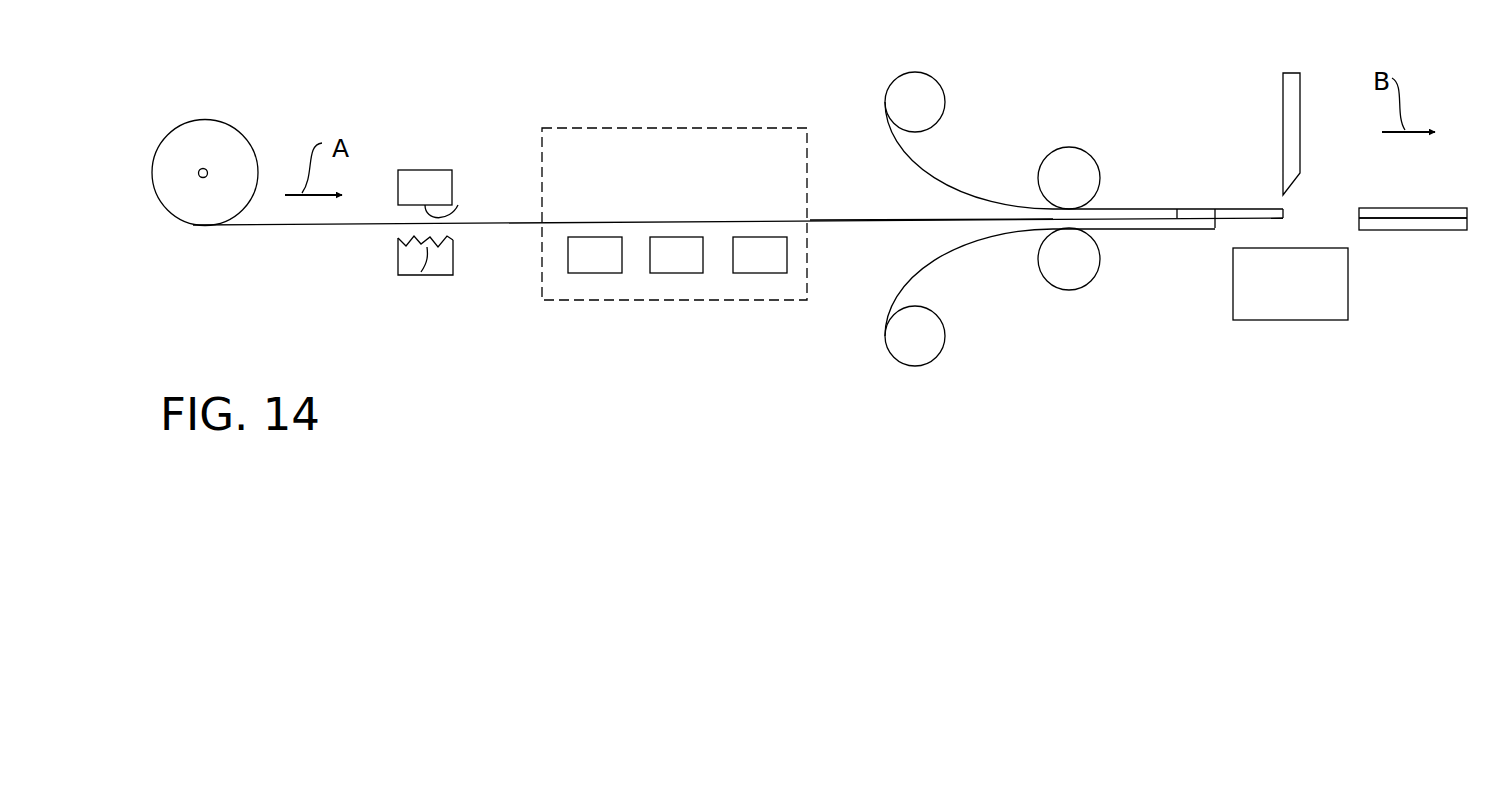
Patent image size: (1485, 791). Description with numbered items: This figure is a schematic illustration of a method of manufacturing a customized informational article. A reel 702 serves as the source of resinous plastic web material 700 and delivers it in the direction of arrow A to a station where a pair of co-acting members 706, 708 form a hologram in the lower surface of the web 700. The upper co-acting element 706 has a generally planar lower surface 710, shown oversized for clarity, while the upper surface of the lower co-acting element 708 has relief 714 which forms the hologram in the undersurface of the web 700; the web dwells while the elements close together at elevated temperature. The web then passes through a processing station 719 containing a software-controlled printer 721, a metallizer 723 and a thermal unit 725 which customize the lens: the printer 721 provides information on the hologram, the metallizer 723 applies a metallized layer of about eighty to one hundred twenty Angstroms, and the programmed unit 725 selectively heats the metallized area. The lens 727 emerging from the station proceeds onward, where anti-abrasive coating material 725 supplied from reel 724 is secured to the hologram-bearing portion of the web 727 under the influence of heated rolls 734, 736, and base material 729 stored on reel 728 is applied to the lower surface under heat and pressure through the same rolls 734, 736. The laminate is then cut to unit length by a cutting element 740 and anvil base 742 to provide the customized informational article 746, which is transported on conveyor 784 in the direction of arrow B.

The resinous plastic web material 700 is at (305, 227).
The reel 702 is at (212, 115).
The co-acting member 706 is at (432, 165).
The co-acting member 708 is at (430, 277).
The lower surface 710 is at (458, 205).
The relief 714 is at (421, 272).
The processing station 719 is at (667, 128).
The printer 721 is at (605, 275).
The metallizer 723 is at (693, 275).
The thermal unit 725 is at (743, 275).
The lens 727 is at (878, 218).
The reel 724 is at (943, 77).
The reel 728 is at (925, 370).
The base material 729 is at (948, 255).
The heated roll 734 is at (1103, 172).
The heated roll 736 is at (1083, 287).
The cutting element 740 is at (1282, 118).
The anvil base 742 is at (1287, 320).
The customized informational article 746 is at (1423, 205).
The conveyor 784 is at (1423, 230).